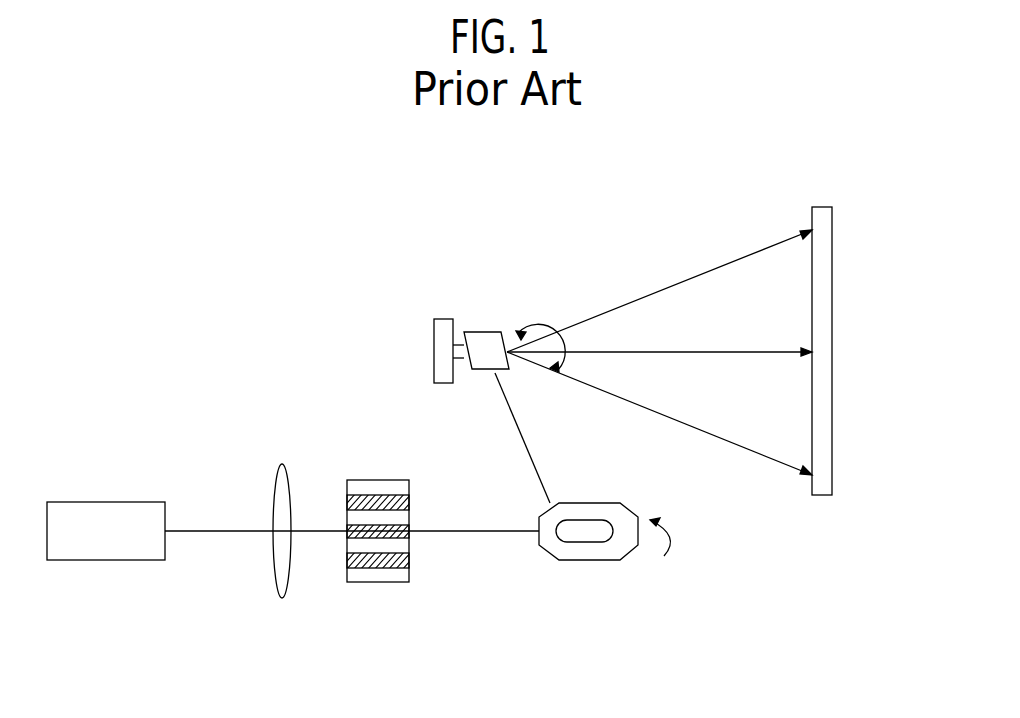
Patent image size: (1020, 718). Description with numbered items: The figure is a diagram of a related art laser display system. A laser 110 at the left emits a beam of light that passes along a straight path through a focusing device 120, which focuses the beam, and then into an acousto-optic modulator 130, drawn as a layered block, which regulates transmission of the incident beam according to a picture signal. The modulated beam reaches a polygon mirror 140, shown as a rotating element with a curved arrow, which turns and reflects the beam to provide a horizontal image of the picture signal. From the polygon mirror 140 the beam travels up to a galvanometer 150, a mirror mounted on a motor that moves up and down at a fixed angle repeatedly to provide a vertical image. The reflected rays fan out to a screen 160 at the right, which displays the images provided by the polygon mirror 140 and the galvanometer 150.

The laser 110 is at (113, 548).
The focusing device 120 is at (281, 588).
The acousto-optic modulator 130 is at (378, 576).
The polygon mirror 140 is at (591, 553).
The galvanometer 150 is at (466, 314).
The screen 160 is at (823, 410).